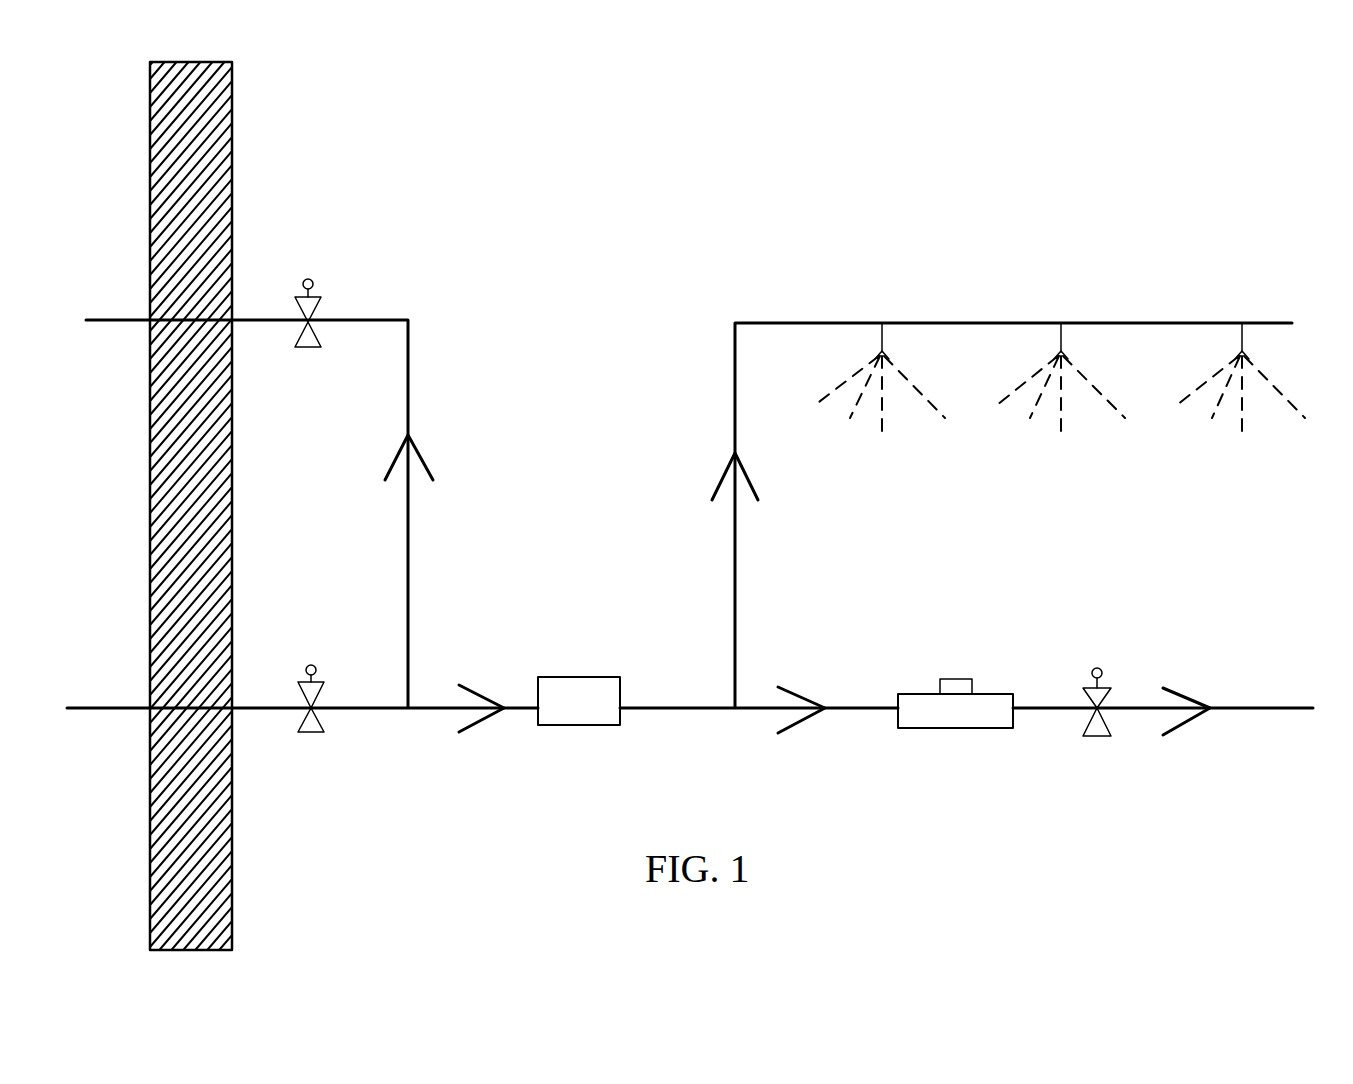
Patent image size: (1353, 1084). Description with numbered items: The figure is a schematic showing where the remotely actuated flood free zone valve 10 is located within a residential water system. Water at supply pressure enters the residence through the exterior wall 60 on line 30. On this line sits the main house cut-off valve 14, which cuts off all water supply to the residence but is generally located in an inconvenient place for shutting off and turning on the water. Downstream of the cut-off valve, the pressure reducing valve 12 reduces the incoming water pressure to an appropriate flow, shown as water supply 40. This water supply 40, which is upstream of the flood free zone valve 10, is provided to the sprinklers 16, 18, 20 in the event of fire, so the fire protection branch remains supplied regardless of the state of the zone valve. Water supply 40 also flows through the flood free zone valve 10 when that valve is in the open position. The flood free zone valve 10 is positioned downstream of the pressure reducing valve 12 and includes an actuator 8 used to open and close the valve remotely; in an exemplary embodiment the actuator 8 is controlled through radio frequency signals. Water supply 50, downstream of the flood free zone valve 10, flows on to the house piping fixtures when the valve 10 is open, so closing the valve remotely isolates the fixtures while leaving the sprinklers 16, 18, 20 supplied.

The exterior wall 60 is at (233, 198).
The line 30 is at (437, 710).
The main house cut-off valve 14 is at (312, 734).
The pressure reducing valve 12 is at (575, 677).
The water supply 40 is at (685, 710).
The sprinkler 16 is at (884, 340).
The sprinkler 18 is at (1063, 340).
The sprinkler 20 is at (1244, 340).
The flood free zone valve 10 is at (950, 728).
The actuator 8 is at (957, 679).
The water supply 50 is at (1045, 706).